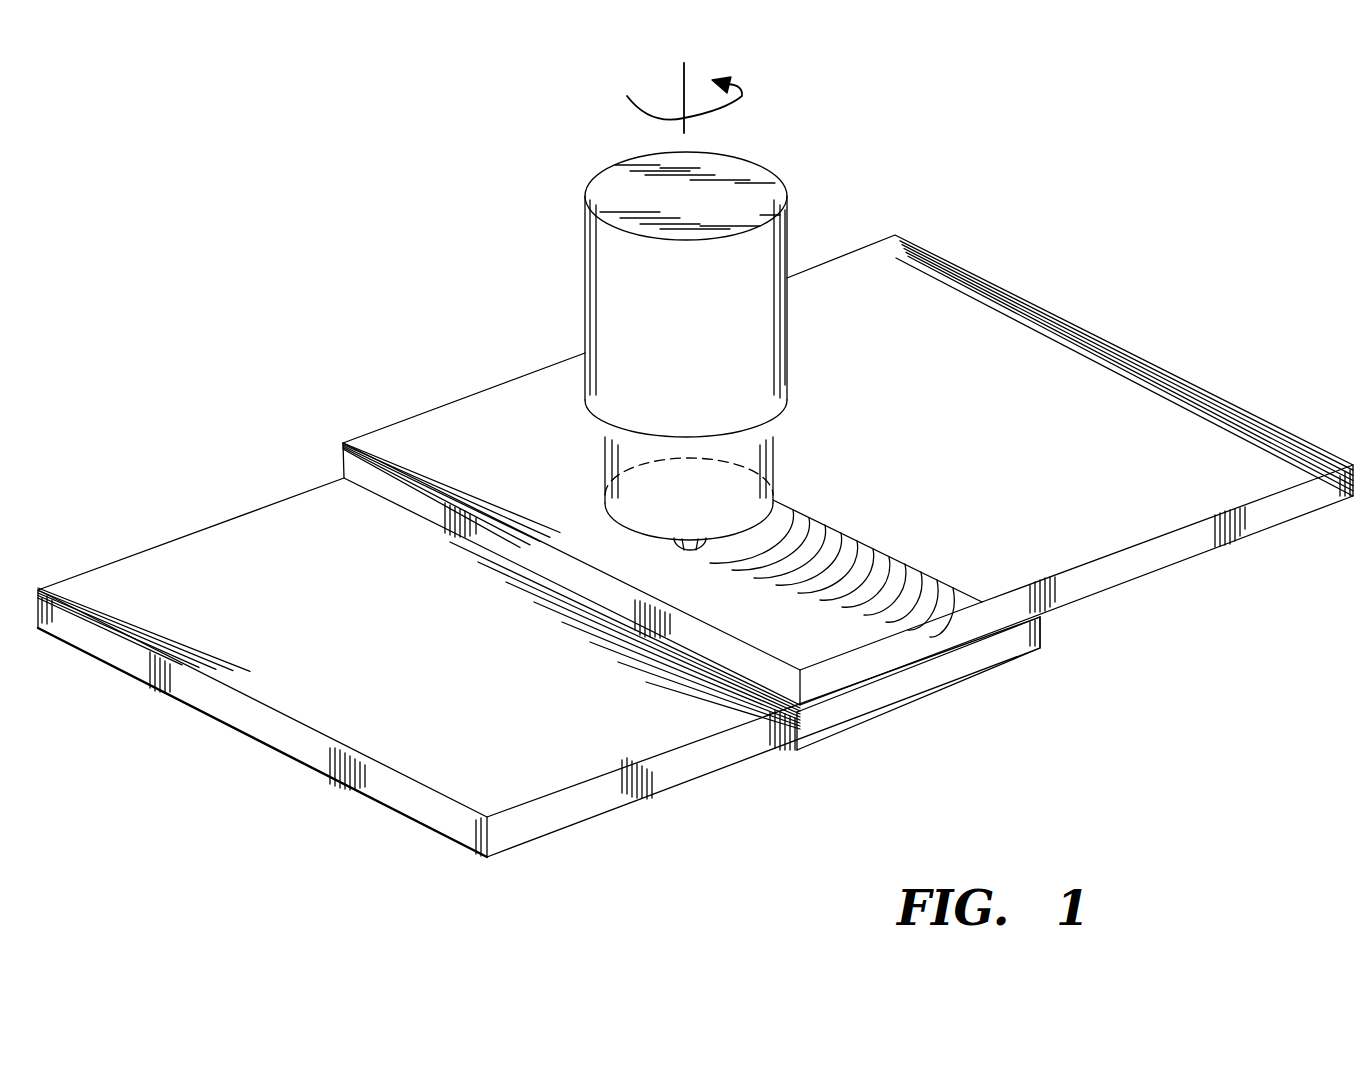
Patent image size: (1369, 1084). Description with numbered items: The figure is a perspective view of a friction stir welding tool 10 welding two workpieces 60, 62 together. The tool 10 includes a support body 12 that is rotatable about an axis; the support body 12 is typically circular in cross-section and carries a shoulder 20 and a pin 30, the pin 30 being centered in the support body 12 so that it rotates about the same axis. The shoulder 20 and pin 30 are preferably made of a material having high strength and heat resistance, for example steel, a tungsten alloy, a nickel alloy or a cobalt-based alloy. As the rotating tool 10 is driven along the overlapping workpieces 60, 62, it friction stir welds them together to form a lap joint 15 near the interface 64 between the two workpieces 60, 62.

The friction stir welding tool 10 is at (856, 176).
The support body 12 is at (607, 300).
The lap joint 15 is at (983, 600).
The shoulder 20 is at (667, 546).
The pin 30 is at (690, 553).
The workpiece 60 is at (1110, 382).
The workpiece 62 is at (600, 800).
The interface 64 is at (944, 652).